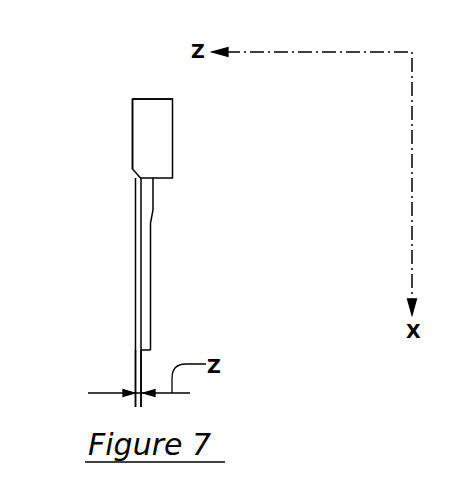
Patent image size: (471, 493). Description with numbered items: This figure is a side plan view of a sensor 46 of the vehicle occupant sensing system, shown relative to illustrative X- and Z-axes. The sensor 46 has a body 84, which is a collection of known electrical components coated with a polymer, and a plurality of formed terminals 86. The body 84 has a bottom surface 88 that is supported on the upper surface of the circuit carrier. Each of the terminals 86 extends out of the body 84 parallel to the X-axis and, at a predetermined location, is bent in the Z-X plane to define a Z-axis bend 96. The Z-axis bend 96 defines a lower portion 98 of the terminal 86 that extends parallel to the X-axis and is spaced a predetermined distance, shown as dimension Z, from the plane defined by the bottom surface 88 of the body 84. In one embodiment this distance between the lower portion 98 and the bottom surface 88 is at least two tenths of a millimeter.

The sensor 46 is at (158, 116).
The body 84 is at (157, 136).
The bottom surface 88 is at (132, 132).
The Z-axis bend 96 is at (147, 223).
The terminals 86 is at (162, 255).
The lower portion 98 is at (141, 287).